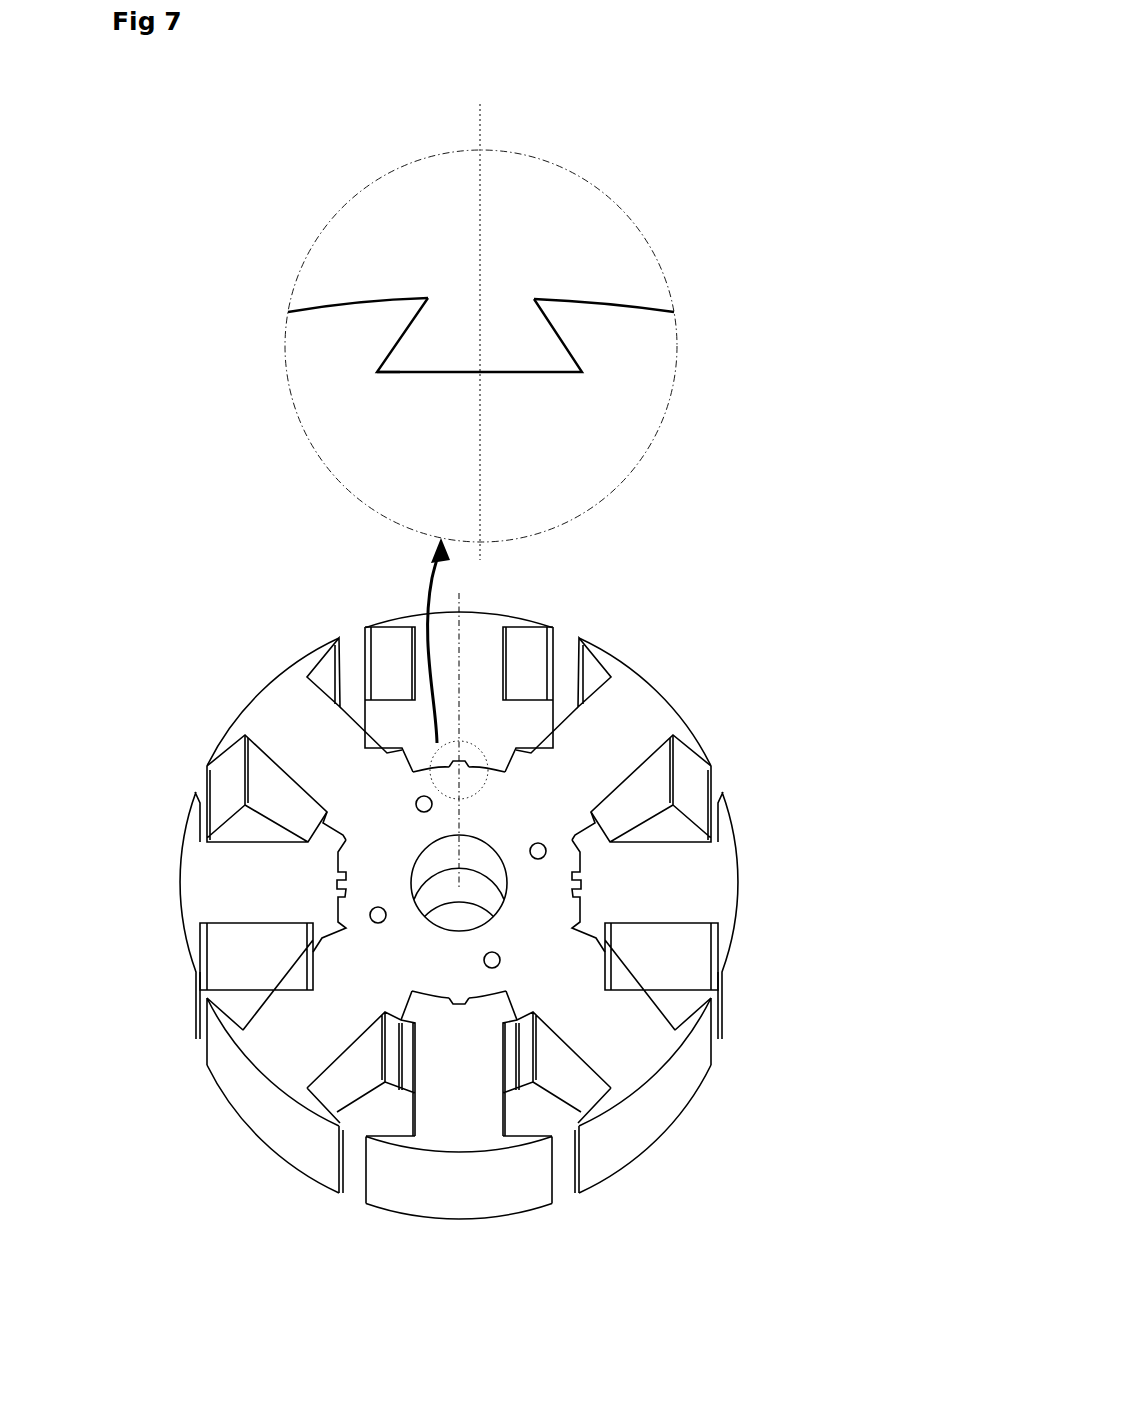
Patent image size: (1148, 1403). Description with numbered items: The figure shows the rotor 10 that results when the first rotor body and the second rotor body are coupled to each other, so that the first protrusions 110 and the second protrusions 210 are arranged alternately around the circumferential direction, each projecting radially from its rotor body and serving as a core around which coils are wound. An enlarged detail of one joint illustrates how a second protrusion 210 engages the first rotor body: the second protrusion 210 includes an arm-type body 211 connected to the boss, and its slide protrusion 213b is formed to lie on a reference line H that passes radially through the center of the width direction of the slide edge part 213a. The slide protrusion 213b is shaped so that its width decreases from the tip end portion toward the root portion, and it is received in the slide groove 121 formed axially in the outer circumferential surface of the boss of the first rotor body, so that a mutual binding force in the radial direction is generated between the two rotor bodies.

The rotor 10 is at (500, 820).
The first protrusion 110 is at (665, 681).
The second protrusion 210 is at (744, 862).
The arm-type body 211 is at (442, 190).
The slide edge part 213a is at (619, 306).
The slide protrusion 213b is at (431, 342).
The slide groove 121 is at (410, 376).
The reference line H is at (480, 112).